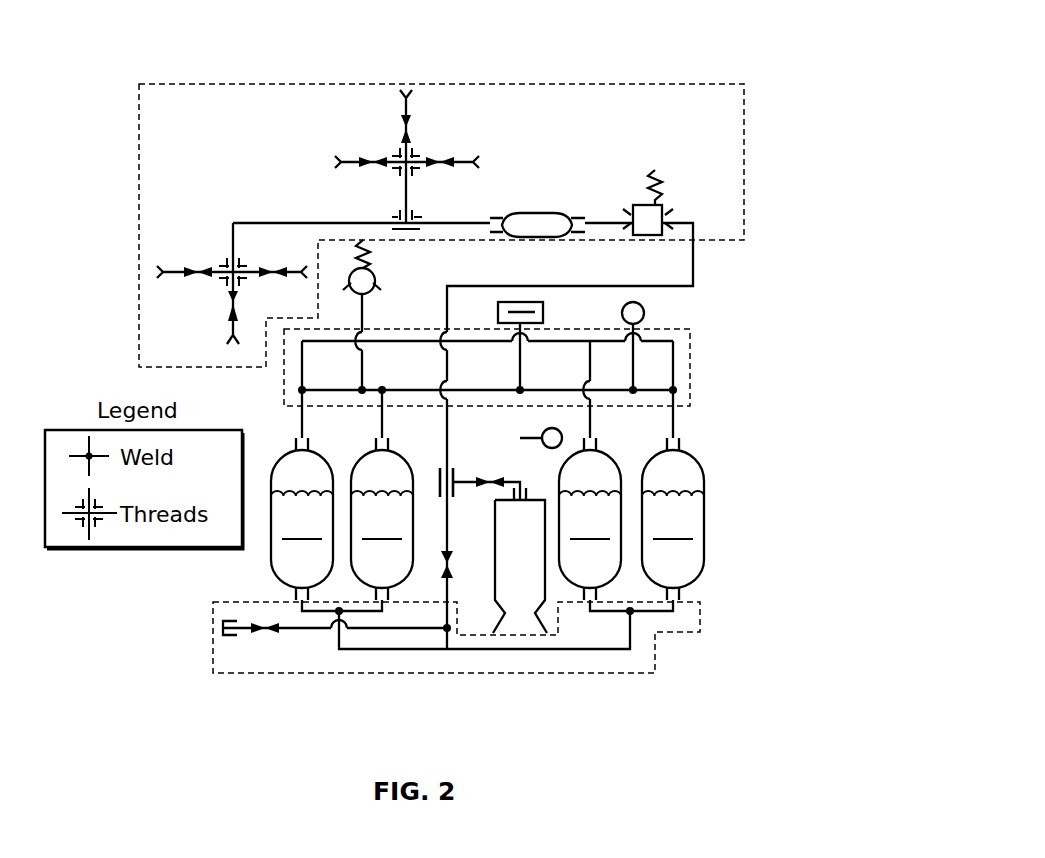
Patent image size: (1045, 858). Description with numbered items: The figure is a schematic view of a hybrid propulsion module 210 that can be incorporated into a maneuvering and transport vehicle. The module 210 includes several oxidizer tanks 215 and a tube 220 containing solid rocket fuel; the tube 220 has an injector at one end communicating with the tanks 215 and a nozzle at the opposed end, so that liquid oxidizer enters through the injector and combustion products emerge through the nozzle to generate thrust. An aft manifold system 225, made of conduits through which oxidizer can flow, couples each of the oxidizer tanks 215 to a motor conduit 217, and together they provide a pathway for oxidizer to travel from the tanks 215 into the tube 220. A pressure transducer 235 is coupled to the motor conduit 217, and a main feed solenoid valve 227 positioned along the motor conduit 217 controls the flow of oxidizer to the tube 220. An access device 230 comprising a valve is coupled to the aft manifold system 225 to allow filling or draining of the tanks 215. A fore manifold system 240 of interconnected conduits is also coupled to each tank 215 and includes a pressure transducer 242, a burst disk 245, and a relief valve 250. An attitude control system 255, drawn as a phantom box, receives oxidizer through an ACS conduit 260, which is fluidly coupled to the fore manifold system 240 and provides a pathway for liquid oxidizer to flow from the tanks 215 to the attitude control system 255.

The hybrid propulsion module 210 is at (106, 50).
The oxidizer tanks 215 is at (487, 519).
The motor conduit 217 is at (456, 472).
The tube 220 is at (541, 569).
The aft manifold system 225 is at (688, 636).
The main feed solenoid valve 227 is at (516, 470).
The access device 230 is at (262, 634).
The pressure transducer 235 is at (554, 428).
The fore manifold system 240 is at (707, 372).
The pressure transducer 242 is at (645, 311).
The burst disk 245 is at (546, 310).
The relief valve 250 is at (376, 277).
The attitude control system 255 is at (746, 154).
The ACS conduit 260 is at (697, 276).